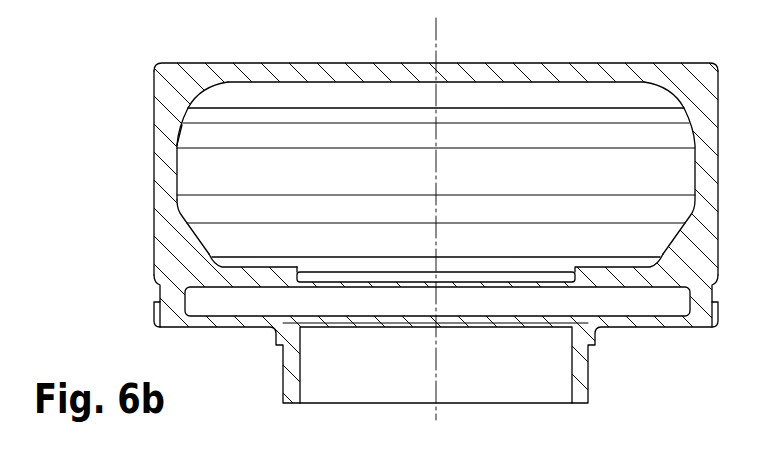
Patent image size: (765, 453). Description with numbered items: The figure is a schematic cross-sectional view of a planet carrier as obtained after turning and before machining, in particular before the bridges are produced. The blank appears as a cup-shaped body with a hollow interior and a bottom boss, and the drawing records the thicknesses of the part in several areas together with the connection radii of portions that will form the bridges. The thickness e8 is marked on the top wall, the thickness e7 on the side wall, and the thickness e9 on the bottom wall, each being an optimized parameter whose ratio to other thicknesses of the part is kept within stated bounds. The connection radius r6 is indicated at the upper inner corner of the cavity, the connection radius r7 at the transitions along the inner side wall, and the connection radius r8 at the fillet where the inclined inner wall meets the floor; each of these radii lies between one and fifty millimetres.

The connection radius r6 is at (208, 87).
The connection radius r7 is at (178, 132).
The connection radius r8 is at (238, 224).
The thickness e7 is at (240, 179).
The thickness e8 is at (305, 125).
The thickness e9 is at (288, 302).